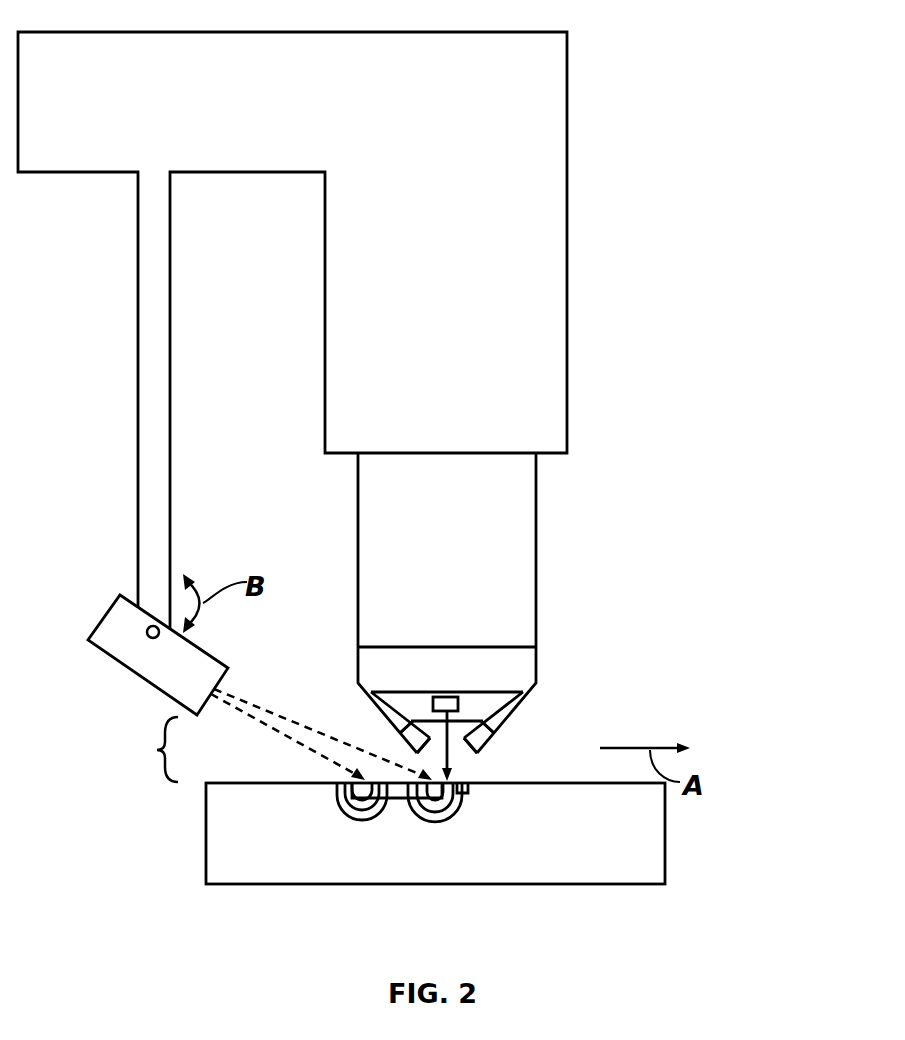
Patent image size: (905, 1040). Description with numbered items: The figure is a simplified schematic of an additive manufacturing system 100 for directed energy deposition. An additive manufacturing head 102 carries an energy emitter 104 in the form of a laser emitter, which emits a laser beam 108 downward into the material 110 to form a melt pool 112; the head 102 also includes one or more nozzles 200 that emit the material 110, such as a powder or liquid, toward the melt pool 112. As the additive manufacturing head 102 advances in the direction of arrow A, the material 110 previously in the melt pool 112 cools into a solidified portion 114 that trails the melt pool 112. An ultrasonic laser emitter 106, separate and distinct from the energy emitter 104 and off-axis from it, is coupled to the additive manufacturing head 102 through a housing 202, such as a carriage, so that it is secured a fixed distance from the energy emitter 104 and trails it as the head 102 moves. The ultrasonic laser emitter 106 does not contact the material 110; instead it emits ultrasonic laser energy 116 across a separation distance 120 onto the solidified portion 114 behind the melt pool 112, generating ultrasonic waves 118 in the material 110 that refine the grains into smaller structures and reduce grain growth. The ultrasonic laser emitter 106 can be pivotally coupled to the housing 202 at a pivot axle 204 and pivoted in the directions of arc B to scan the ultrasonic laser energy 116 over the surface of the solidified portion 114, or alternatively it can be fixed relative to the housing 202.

The additive manufacturing system 100 is at (735, 52).
The additive manufacturing head 102 is at (537, 525).
The energy emitter 104 is at (450, 697).
The ultrasonic laser emitter 106 is at (135, 673).
The laser beam 108 is at (492, 728).
The material 110 is at (463, 779).
The melt pool 112 is at (483, 783).
The solidified portion 114 is at (380, 790).
The ultrasonic laser energy 116 is at (268, 712).
The ultrasonic waves 118 is at (365, 822).
The separation distance 120 is at (135, 749).
The nozzles 200 is at (404, 738).
The housing 202 is at (567, 268).
The pivot axle 204 is at (147, 628).